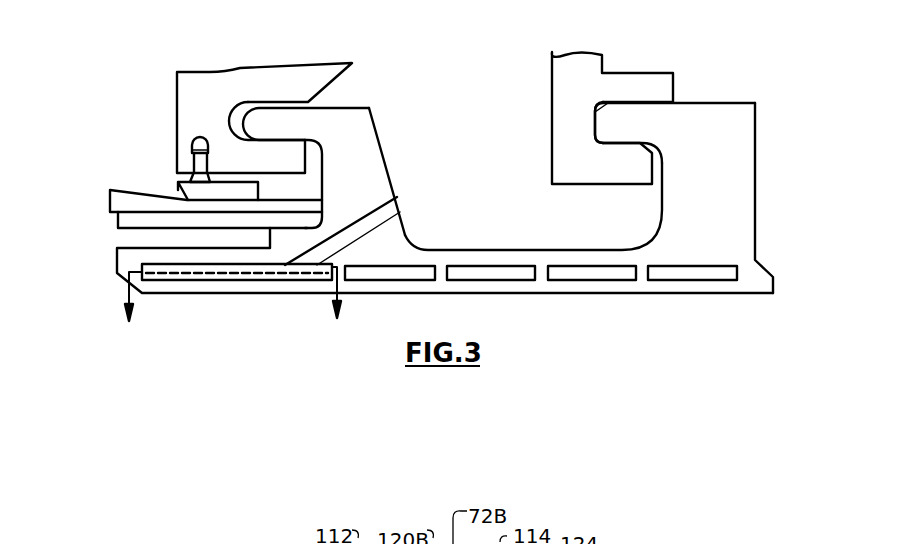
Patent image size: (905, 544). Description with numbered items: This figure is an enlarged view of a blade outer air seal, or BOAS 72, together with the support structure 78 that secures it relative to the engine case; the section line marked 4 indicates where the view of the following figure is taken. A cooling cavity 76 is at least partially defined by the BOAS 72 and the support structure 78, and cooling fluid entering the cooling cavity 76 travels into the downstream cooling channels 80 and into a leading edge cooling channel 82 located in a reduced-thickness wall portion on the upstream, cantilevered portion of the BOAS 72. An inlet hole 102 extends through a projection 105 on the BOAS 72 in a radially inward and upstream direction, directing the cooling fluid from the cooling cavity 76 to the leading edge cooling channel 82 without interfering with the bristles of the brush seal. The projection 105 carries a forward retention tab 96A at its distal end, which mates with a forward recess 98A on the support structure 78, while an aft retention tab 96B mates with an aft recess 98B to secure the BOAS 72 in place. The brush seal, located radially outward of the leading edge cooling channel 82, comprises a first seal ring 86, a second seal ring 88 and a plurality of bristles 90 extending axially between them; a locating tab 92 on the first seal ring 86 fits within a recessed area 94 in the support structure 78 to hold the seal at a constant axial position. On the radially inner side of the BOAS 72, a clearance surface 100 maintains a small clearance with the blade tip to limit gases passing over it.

The BOAS 72 is at (752, 160).
The cooling cavity 76 is at (468, 153).
The support structure 78 is at (186, 89).
The cooling channels 80 is at (420, 266).
The leading edge cooling channel 82 is at (212, 279).
The first seal ring 86 is at (178, 187).
The second seal ring 88 is at (118, 216).
The plurality of bristles 90 is at (110, 195).
The locating tab 92 is at (204, 160).
The recessed area 94 is at (201, 137).
The forward retention tab 96A is at (272, 117).
The aft retention tab 96B is at (638, 112).
The forward recess 98A is at (245, 101).
The aft recess 98B is at (604, 95).
The clearance surface 100 is at (675, 295).
The inlet hole 102 is at (395, 203).
The projection 105 is at (376, 125).
The section line 4- 4 is at (232, 300).